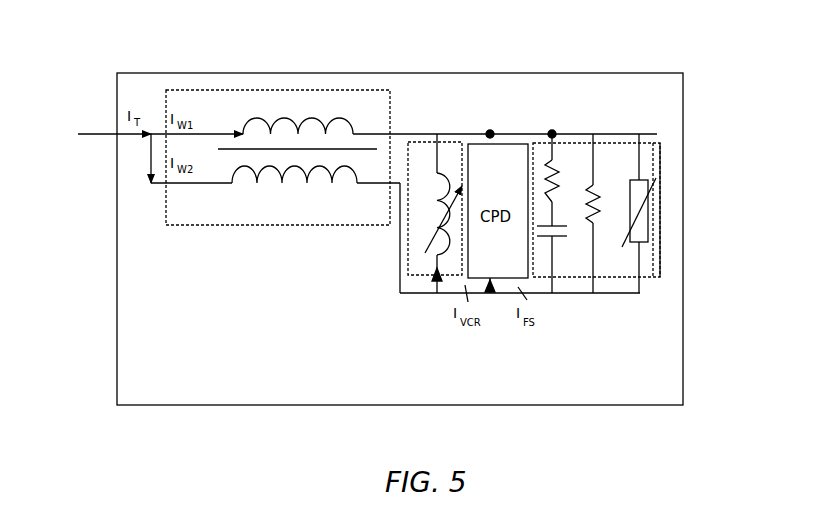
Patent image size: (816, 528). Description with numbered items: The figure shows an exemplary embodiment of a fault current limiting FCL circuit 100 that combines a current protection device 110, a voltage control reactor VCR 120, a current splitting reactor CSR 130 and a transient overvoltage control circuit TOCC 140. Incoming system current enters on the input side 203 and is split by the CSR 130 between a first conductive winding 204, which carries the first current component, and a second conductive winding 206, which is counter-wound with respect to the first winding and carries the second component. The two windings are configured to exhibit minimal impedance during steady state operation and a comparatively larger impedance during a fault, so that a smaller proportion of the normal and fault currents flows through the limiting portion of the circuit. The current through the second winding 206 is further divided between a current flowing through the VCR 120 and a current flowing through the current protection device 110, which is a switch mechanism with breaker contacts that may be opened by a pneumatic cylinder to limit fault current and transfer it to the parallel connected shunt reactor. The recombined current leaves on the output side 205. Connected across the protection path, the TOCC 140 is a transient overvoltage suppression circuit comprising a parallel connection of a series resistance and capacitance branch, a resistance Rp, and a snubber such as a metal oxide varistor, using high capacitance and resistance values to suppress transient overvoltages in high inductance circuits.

The FCL circuit 100 is at (563, 110).
The input line 203 is at (52, 122).
The first conductive winding 204 is at (340, 117).
The second conductive winding 206 is at (273, 191).
The current protection device 110 is at (490, 132).
The output line 205 is at (615, 133).
The current splitting reactor 130 is at (210, 144).
The voltage control reactor 120 is at (408, 275).
The transient overvoltage control circuit 140 is at (663, 231).